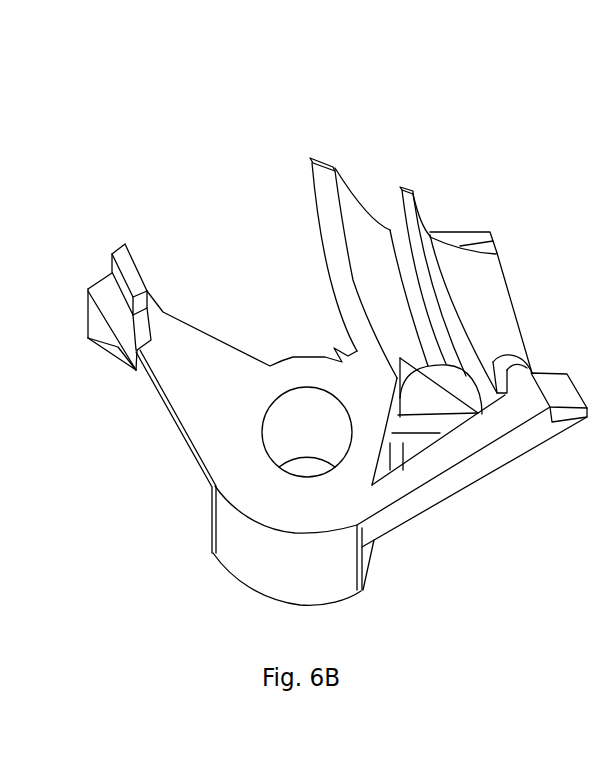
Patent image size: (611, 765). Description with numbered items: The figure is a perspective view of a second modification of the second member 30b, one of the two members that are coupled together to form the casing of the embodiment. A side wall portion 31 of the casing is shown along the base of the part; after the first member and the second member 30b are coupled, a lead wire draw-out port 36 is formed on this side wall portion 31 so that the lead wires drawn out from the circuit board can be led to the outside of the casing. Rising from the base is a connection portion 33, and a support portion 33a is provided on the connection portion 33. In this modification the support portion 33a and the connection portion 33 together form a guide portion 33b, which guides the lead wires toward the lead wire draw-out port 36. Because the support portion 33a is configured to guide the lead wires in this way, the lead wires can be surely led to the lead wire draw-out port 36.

The second member 30b is at (331, 73).
The side wall portion 31 is at (418, 500).
The connection portion 33 is at (322, 219).
The support portion 33a is at (429, 240).
The guide portion 33b is at (389, 195).
The lead wire draw-out port 36 is at (418, 430).